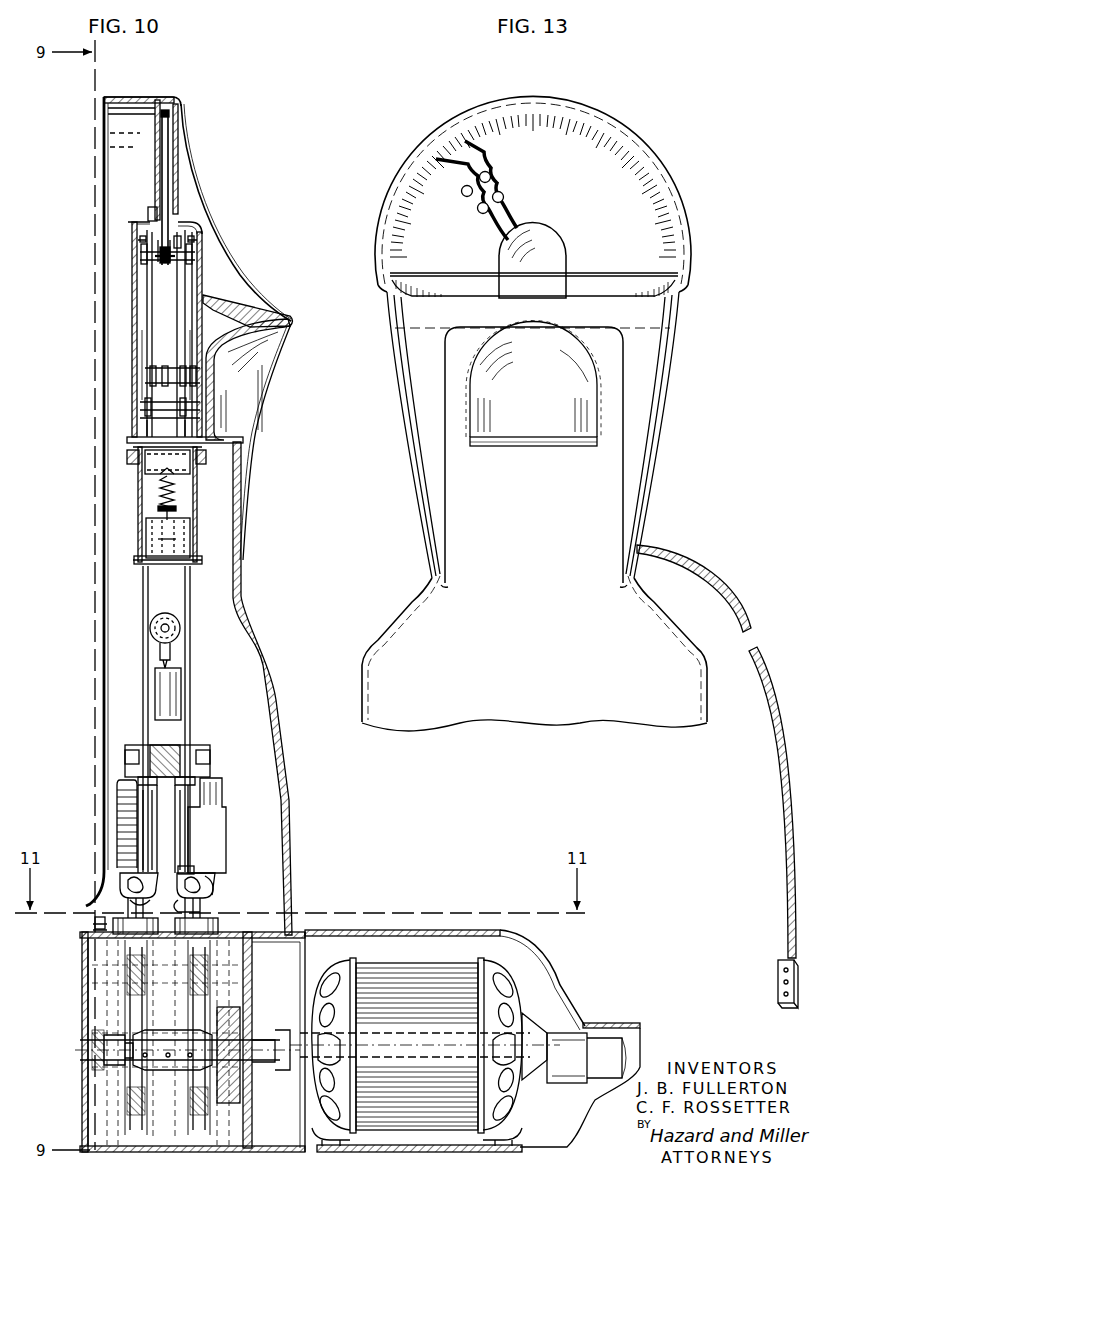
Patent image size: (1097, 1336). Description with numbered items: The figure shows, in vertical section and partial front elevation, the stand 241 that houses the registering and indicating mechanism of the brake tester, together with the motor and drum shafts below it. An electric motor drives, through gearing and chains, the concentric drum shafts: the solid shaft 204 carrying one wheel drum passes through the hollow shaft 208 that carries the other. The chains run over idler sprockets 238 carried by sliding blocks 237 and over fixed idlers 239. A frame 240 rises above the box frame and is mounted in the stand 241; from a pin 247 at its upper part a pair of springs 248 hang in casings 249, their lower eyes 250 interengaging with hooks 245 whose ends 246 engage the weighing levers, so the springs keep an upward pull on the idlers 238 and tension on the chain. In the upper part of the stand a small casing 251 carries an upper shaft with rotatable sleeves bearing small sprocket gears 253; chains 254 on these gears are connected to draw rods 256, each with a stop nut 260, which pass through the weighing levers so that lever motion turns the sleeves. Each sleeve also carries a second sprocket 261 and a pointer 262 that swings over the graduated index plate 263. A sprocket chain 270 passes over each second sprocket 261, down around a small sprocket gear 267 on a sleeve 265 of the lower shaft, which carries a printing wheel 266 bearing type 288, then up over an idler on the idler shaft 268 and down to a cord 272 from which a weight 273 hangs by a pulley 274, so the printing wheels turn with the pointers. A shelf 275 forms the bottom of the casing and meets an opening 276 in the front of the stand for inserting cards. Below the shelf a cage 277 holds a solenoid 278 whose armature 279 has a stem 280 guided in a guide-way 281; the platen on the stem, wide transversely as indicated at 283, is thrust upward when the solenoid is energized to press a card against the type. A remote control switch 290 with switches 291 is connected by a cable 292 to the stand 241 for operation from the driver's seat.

In FIG. 10, the solid shaft 204 is at (617, 1034).
In FIG. 10, the hollow shaft 208 is at (563, 1031).
In FIG. 10, the sliding block 237 is at (220, 924).
In FIG. 10, the idler sprocket 238 is at (200, 960).
In FIG. 10, the idler 239 is at (132, 1113).
In FIG. 10, the frame 240 is at (155, 893).
In FIG. 10, the stand 241 is at (278, 724).
In FIG. 13, the stand 241 is at (647, 512).
In FIG. 10, the hook 245 is at (202, 899).
In FIG. 10, the hook end 246 is at (200, 906).
In FIG. 10, the pin 247 is at (214, 756).
In FIG. 10, the spring 248 is at (120, 797).
In FIG. 10, the casing 249 is at (222, 823).
In FIG. 10, the eye 250 is at (210, 888).
In FIG. 10, the small casing 251 is at (203, 266).
In FIG. 13, the small casing 251 is at (570, 268).
In FIG. 10, the small sprocket gear 253 is at (203, 240).
In FIG. 10, the chain 254 is at (140, 245).
In FIG. 10, the draw rod 256 is at (233, 322).
In FIG. 10, the stop nut 260 is at (190, 868).
In FIG. 10, the second sprocket 261 is at (178, 243).
In FIG. 10, the pointer 262 is at (168, 112).
In FIG. 13, the pointer 262 is at (498, 191).
In FIG. 10, the index plate 263 is at (158, 122).
In FIG. 13, the index plate 263 is at (655, 232).
In FIG. 10, the sleeve 265 is at (240, 441).
In FIG. 10, the printing wheel 266 is at (160, 426).
In FIG. 10, the small sprocket gear 267 is at (147, 417).
In FIG. 10, the idler shaft 268 is at (167, 366).
In FIG. 10, the sprocket chain 270 is at (178, 300).
In FIG. 10, the cord 272 is at (186, 599).
In FIG. 10, the weight 273 is at (160, 703).
In FIG. 10, the pulley 274 is at (182, 642).
In FIG. 10, the shelf 275 is at (236, 446).
In FIG. 13, the shelf 275 is at (577, 447).
In FIG. 10, the opening 276 is at (233, 430).
In FIG. 13, the opening 276 is at (518, 447).
In FIG. 10, the cage 277 is at (140, 503).
In FIG. 10, the solenoid 278 is at (142, 538).
In FIG. 10, the armature 279 is at (148, 562).
In FIG. 10, the stem 280 is at (175, 508).
In FIG. 10, the guide-way 281 is at (180, 481).
In FIG. 10, the platen width 283 is at (138, 468).
In FIG. 10, the type 288 is at (142, 448).
In FIG. 13, the remote control switch 290 is at (778, 968).
In FIG. 13, the switch 291 is at (782, 991).
In FIG. 13, the cable 292 is at (783, 903).